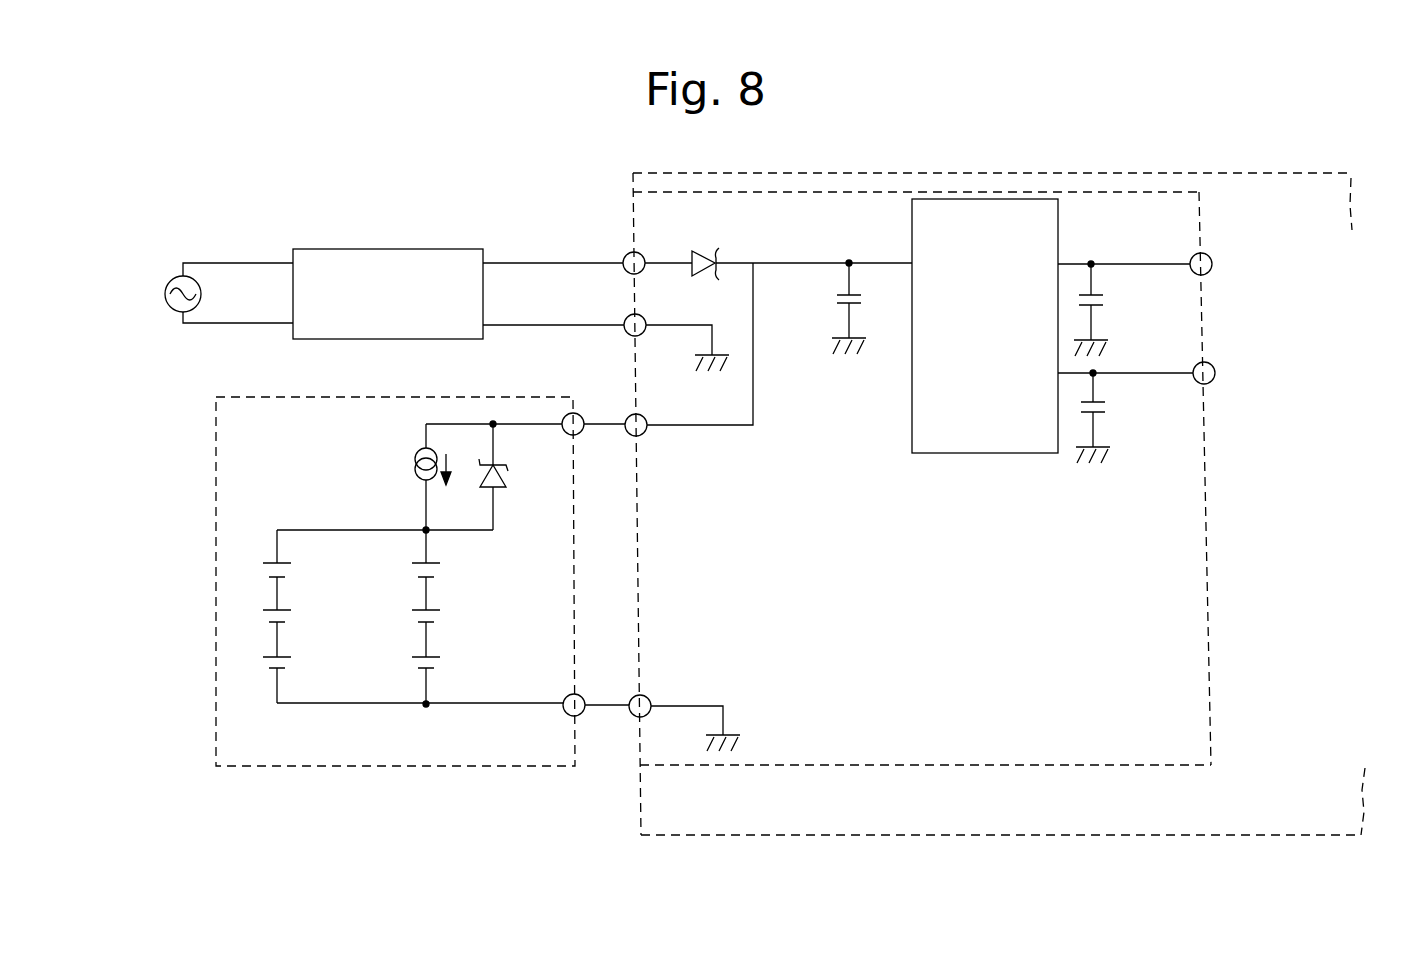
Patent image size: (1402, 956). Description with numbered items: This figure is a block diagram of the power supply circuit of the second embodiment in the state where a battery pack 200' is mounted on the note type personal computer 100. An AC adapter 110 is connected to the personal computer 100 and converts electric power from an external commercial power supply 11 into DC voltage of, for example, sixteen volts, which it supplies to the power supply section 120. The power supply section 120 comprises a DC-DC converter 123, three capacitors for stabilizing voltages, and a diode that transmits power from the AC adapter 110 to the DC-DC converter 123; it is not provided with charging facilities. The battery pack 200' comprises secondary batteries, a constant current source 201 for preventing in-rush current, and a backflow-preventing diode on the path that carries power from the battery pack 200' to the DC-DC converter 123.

The commercial power supply 11 is at (168, 284).
The AC adapter 110 is at (452, 249).
The personal computer 100 is at (1101, 173).
The power supply section 120 is at (919, 450).
The DC-DC converter 123 is at (1058, 247).
The battery pack 200' is at (422, 553).
The constant current source 201 is at (416, 453).